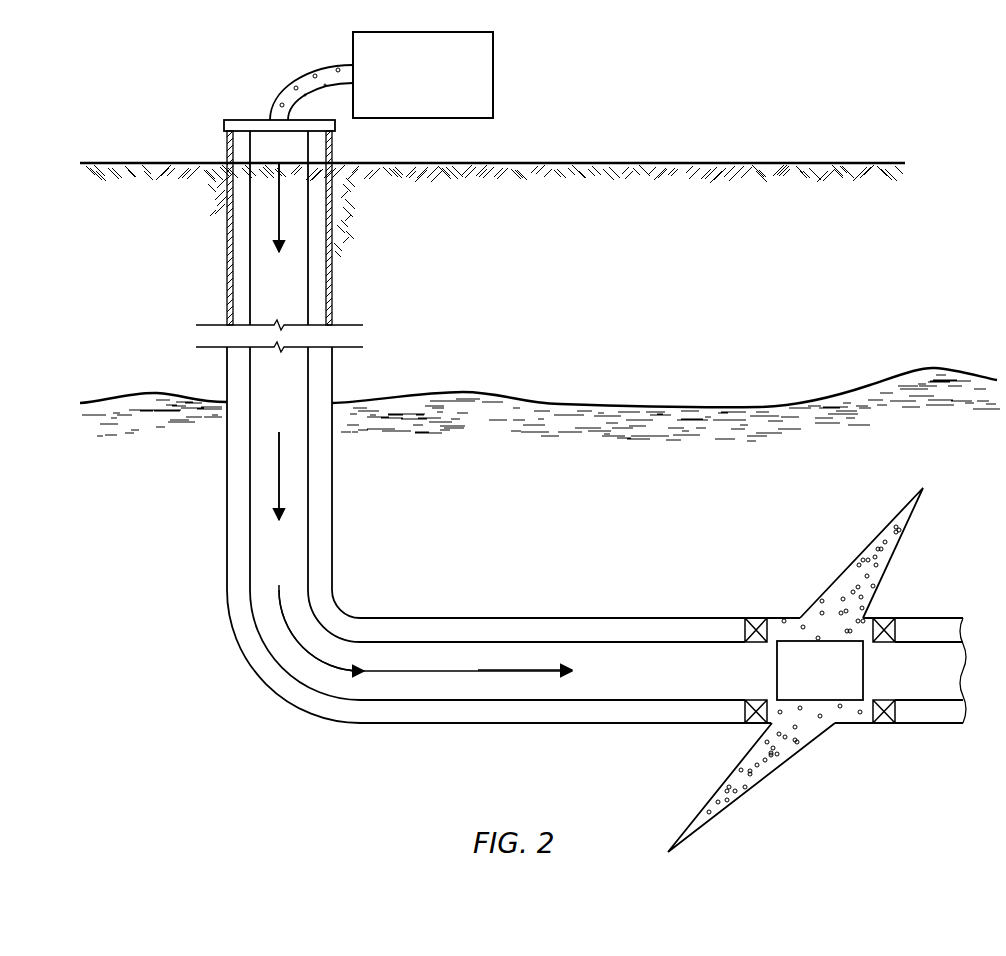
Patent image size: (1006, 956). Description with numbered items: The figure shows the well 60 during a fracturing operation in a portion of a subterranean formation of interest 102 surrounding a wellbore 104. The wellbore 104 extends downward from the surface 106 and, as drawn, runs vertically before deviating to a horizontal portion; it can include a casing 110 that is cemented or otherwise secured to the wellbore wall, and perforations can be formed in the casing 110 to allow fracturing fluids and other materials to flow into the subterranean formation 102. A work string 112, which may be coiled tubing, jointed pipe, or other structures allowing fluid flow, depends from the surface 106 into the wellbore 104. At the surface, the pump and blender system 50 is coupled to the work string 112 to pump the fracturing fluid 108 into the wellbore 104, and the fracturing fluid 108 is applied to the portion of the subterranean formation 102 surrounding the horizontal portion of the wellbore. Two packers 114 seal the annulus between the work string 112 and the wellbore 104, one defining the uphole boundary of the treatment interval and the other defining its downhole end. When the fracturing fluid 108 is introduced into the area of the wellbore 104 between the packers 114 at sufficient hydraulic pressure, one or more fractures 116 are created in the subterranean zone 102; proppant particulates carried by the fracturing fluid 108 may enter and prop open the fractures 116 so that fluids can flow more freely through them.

The pump and blender system 50 is at (438, 82).
The well 60 is at (551, 429).
The subterranean formation 102 is at (543, 472).
The wellbore 104 is at (240, 233).
The surface 106 is at (754, 163).
The fracturing fluid 108 is at (302, 73).
The casing 110 is at (226, 273).
The work string 112 is at (250, 536).
The packers 114 is at (757, 617).
The fractures 116 is at (842, 555).